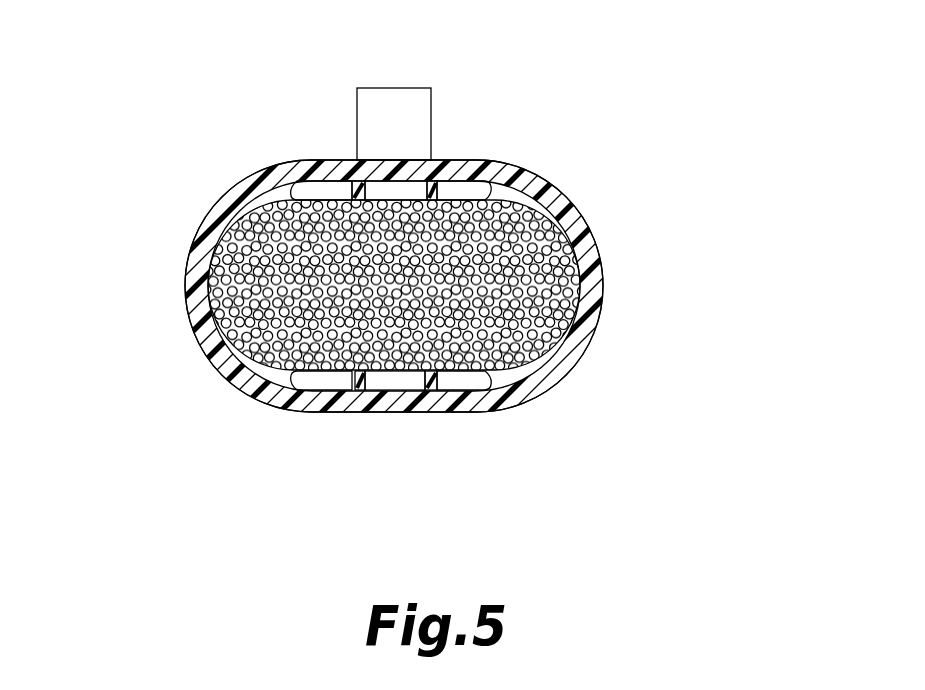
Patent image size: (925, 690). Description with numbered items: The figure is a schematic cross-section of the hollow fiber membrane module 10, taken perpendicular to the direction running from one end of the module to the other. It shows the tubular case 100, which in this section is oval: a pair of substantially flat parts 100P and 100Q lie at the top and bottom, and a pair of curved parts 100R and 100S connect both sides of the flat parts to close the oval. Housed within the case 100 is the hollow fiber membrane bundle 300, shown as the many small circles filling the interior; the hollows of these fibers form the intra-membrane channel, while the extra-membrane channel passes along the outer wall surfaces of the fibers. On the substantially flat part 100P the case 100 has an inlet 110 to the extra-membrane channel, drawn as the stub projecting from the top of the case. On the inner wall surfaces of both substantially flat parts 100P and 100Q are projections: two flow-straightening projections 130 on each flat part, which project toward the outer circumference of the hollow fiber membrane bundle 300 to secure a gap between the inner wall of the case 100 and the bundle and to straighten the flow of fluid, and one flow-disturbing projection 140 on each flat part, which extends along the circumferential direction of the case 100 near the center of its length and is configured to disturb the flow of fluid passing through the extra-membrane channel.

The hollow fiber membrane module 10 is at (454, 276).
The case 100 is at (200, 186).
The substantially flat part 100P is at (459, 168).
The substantially flat part 100Q is at (440, 412).
The curved part 100R is at (186, 288).
The curved part 100S is at (596, 277).
The inlet 110 is at (393, 87).
The flow-straightening projection 130 is at (345, 178).
The flow-disturbing projection 140 is at (396, 178).
The hollow fiber membrane bundle 300 is at (517, 327).